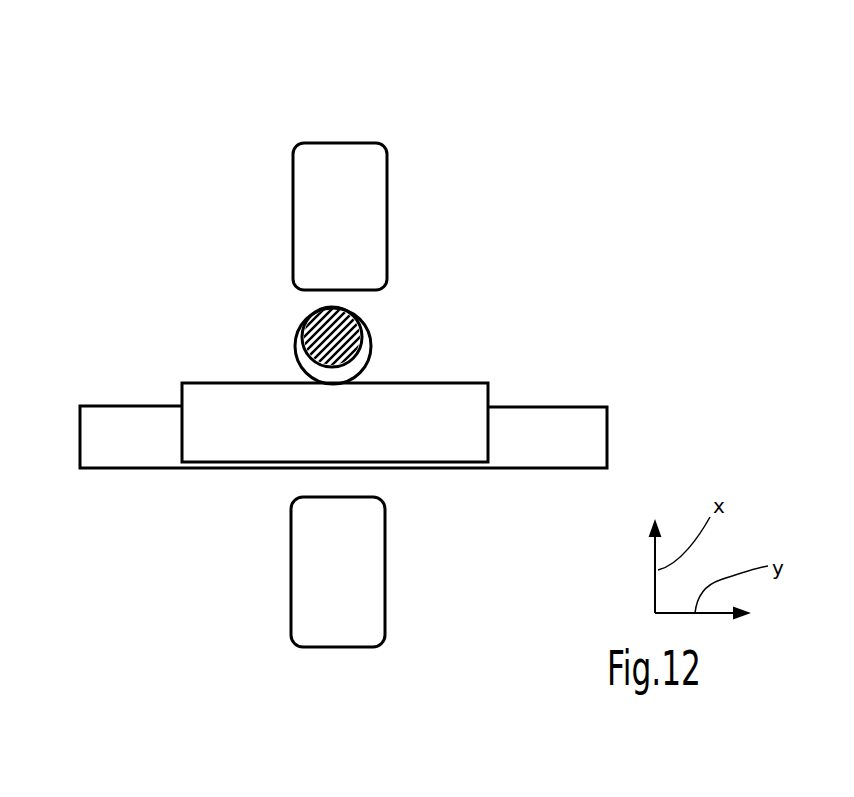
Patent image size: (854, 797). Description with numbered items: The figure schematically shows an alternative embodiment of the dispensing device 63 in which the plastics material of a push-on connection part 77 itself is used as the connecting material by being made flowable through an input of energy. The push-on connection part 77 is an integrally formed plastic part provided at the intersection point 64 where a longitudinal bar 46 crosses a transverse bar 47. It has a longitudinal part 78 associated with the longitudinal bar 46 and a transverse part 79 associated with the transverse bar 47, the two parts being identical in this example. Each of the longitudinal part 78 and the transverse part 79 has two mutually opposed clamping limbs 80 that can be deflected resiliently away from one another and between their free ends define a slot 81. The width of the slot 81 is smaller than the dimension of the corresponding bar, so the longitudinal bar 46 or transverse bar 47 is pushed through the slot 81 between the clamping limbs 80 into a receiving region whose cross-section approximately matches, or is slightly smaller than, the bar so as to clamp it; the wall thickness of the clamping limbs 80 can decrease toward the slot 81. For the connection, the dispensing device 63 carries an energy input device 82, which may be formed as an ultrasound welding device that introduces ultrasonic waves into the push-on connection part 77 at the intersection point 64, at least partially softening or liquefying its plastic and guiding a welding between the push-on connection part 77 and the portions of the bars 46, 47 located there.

The longitudinal bar 46 is at (338, 325).
The transverse bar 47 is at (595, 435).
The dispensing device 63 is at (428, 143).
The intersection point 64 is at (415, 363).
The push-on connection part 77 is at (216, 353).
The longitudinal part 78 is at (314, 371).
The transverse part 79 is at (488, 393).
The clamping limbs 80 is at (295, 340).
The slot 81 is at (309, 310).
The energy input device 82 is at (367, 162).